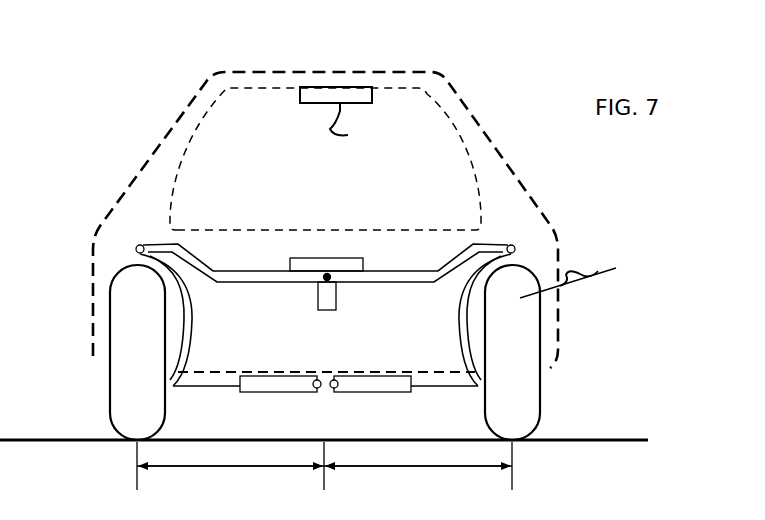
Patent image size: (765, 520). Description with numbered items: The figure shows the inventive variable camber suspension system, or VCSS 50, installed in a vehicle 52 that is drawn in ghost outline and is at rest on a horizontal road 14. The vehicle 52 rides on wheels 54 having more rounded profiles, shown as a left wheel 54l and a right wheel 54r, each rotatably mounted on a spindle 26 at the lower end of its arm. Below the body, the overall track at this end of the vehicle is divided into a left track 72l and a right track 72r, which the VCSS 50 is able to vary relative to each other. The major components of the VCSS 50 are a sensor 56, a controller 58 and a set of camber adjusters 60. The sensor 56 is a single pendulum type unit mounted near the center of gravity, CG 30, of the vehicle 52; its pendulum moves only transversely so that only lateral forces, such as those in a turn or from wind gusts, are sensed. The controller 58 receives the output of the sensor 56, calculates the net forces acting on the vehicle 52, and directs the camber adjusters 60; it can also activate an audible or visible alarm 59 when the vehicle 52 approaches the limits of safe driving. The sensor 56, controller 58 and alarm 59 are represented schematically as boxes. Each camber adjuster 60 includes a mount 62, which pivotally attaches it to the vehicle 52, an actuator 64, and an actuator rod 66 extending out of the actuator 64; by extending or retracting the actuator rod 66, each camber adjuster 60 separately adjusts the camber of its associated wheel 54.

The road 14 is at (632, 437).
The spindle 26 is at (166, 355).
The center of gravity (CG) 30 is at (324, 275).
The variable camber suspension system (VCSS) 50 is at (144, 224).
The vehicle 52 is at (350, 78).
The wheels 54 is at (600, 274).
The left wheel 54l is at (118, 405).
The right wheel 54r is at (543, 403).
The sensor 56 is at (326, 296).
The controller 58 is at (327, 259).
The alarm 59 is at (352, 120).
The camber adjuster 60 is at (231, 398).
The mount 62 is at (317, 393).
The actuator 64 is at (272, 385).
The actuator rod 66 is at (193, 385).
The left track 72l is at (230, 466).
The right track 72r is at (418, 466).